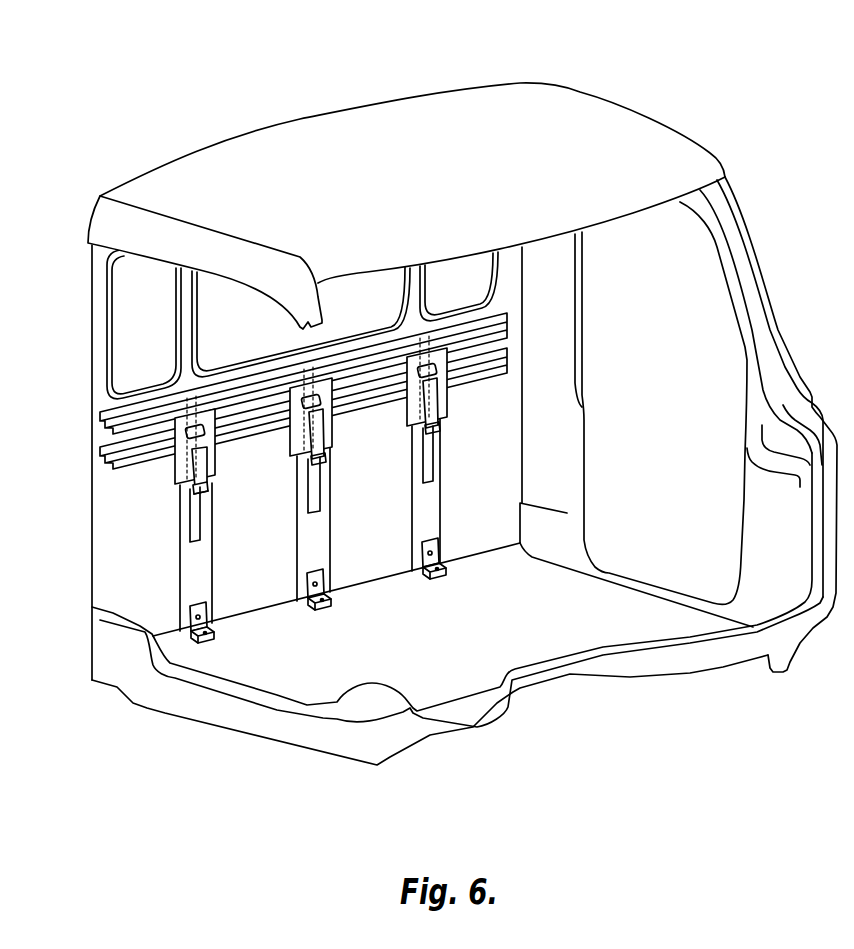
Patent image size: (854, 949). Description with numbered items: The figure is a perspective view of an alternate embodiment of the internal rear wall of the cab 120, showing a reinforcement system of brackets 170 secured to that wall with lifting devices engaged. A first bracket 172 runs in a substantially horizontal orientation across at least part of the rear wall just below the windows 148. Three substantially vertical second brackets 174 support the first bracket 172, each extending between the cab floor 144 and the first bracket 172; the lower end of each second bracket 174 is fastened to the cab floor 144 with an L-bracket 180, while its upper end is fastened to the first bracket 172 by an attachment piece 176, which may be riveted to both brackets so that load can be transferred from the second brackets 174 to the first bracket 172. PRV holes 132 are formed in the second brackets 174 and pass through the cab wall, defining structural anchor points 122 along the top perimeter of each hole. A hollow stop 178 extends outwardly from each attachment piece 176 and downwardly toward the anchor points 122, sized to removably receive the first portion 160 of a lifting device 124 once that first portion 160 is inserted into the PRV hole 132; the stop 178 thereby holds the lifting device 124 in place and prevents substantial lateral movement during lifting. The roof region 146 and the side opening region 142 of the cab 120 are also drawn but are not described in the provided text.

The cab 120 is at (382, 80).
The roof 146 is at (481, 143).
The windows 148 is at (120, 318).
The first bracket 172 is at (112, 432).
The attachment piece 176 is at (209, 441).
The hollow stop 178 is at (208, 467).
The first portion 160 is at (203, 487).
The structural anchor points 122 is at (192, 483).
The lifting device 124 is at (190, 493).
The system of brackets 170 is at (160, 540).
The second brackets 174 is at (192, 570).
The PRV holes 132 is at (202, 528).
The door opening frame 142 is at (558, 350).
The L-bracket 180 is at (217, 633).
The cab floor 144 is at (308, 680).